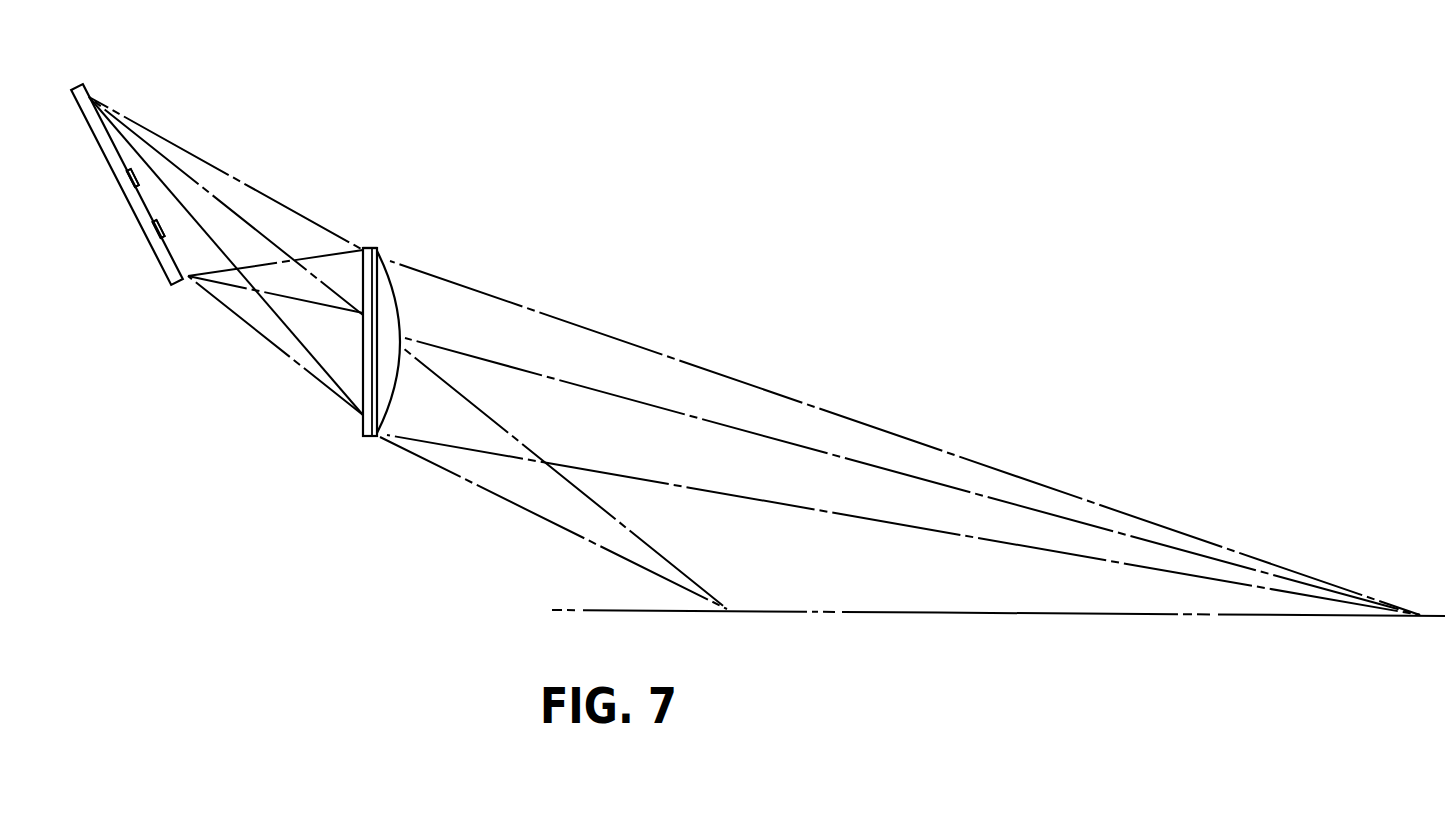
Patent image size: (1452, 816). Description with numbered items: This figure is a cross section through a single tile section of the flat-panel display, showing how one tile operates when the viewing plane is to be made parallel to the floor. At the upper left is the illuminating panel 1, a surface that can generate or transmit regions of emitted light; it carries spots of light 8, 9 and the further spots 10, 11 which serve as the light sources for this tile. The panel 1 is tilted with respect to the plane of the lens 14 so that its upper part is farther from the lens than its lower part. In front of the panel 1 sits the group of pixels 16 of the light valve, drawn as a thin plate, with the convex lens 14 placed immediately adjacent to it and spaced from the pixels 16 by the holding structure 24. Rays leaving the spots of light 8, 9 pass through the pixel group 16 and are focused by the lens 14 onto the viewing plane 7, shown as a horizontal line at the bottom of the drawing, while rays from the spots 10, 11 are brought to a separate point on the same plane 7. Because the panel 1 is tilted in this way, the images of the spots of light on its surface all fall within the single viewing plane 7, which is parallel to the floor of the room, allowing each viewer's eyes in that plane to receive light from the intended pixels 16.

The illuminating panel 1 is at (84, 84).
The viewing plane 7 is at (927, 613).
The spot of light 8 is at (134, 187).
The spot of light 9 is at (133, 178).
The light emitting element 10 is at (160, 232).
The light emitting element 11 is at (159, 229).
The lens 14 is at (400, 320).
The pixel group 16 is at (366, 249).
The holding structure 24 is at (375, 249).